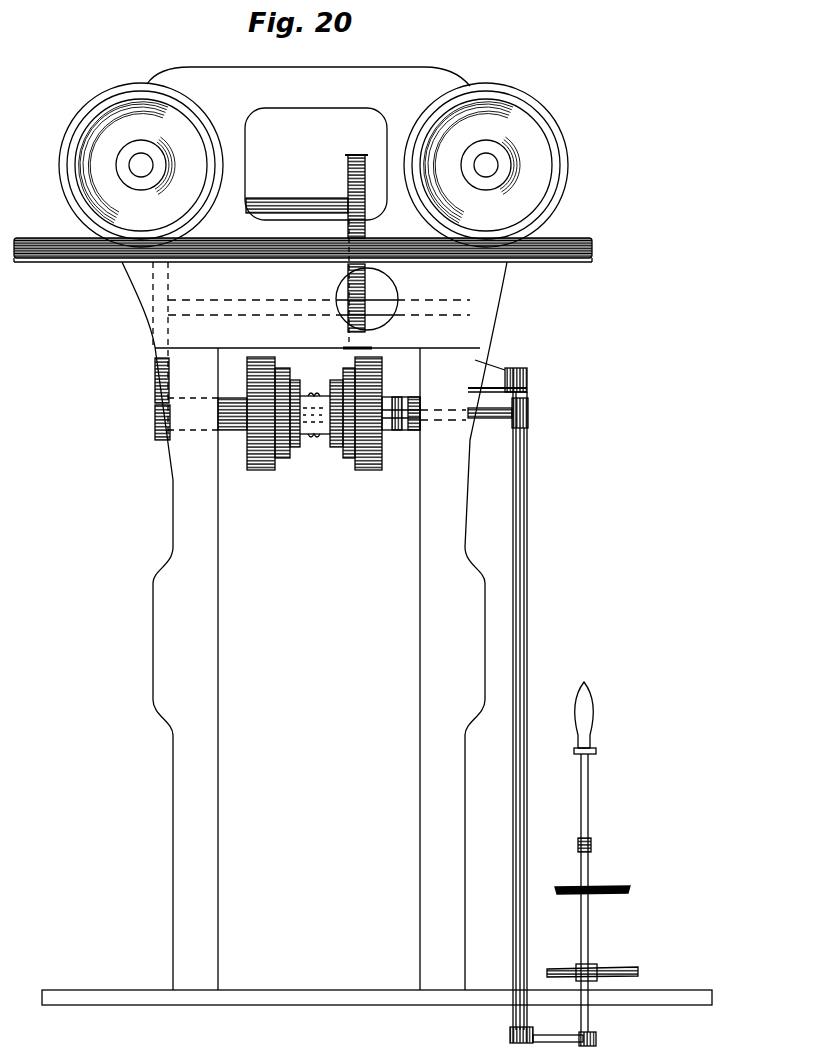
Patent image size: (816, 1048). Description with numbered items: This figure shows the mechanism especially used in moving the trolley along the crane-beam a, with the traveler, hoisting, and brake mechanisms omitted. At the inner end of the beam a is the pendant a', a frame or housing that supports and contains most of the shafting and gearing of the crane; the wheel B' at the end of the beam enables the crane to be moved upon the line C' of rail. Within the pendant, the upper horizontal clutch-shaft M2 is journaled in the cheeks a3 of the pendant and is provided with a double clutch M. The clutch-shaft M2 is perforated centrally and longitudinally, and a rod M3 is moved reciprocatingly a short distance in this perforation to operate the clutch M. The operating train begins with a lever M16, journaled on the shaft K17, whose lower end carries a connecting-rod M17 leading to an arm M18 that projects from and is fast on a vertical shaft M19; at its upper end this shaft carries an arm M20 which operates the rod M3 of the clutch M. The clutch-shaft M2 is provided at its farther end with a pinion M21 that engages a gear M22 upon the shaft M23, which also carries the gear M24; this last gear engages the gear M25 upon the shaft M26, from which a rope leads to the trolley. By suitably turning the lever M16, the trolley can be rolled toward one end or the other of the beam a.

The beam a is at (296, 164).
The pendant a' is at (314, 626).
The cheeks of the pendant a3 is at (319, 669).
The wheel B' is at (315, 165).
The line of rail C' is at (311, 244).
The double clutch M is at (300, 413).
The clutch-shaft M2 is at (397, 430).
The rod M3 is at (497, 389).
The lever M16 is at (592, 857).
The connecting-rod M17 is at (602, 1038).
The arm M18 is at (558, 1028).
The vertical shaft M19 is at (511, 705).
The arm M20 is at (536, 412).
The pinion M21 is at (175, 419).
The gear M22 is at (151, 380).
The shaft M23 is at (319, 299).
The gear M24 is at (370, 275).
The gear M25 is at (355, 239).
The shaft M26 is at (297, 198).
The shaft K17 is at (612, 962).